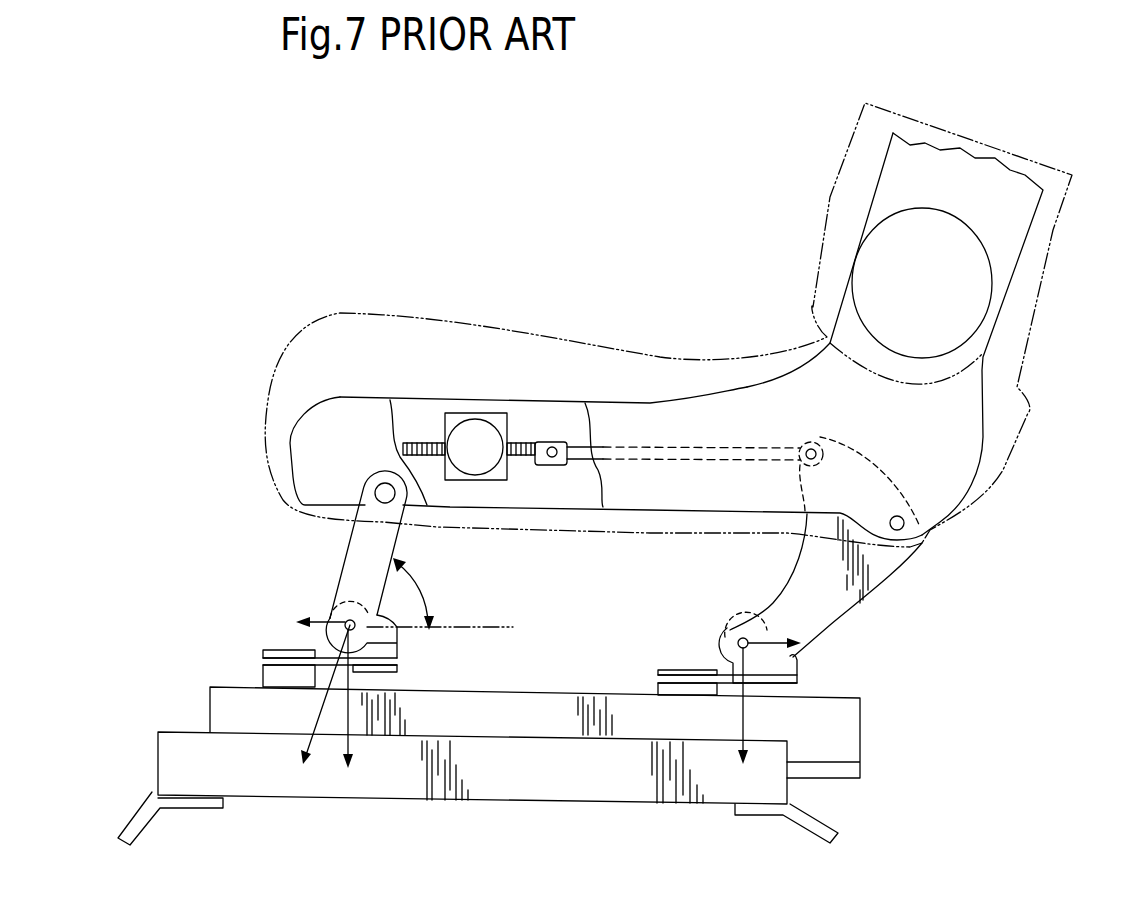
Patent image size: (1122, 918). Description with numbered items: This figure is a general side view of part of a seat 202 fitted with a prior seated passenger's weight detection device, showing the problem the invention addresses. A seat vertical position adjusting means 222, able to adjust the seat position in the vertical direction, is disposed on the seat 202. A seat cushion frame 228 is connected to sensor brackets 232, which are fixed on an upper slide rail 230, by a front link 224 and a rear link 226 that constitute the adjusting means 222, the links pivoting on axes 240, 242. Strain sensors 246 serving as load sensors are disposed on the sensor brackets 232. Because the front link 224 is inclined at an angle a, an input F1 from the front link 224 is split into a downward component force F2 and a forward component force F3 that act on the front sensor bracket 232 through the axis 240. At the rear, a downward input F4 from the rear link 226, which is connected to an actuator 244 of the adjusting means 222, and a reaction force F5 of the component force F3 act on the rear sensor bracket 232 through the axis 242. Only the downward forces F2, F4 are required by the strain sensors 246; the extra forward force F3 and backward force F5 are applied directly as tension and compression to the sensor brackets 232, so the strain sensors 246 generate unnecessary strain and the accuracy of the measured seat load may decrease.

The seat 202 is at (708, 304).
The seat vertical position adjusting means 222 is at (642, 422).
The front link 224 is at (393, 533).
The rear link 226 is at (890, 562).
The seat cushion frame 228 is at (692, 497).
The upper slide rail 230 is at (853, 747).
The sensor brackets 232 is at (397, 643).
The axis 240 is at (347, 603).
The axis 242 is at (727, 623).
The actuator 244 is at (507, 412).
The strain sensors 246 is at (340, 652).
The input F1 is at (320, 717).
The downward component force F2 is at (355, 723).
The forward component force F3 is at (320, 617).
The downward input F4 is at (740, 717).
The reaction force F5 is at (790, 640).
The angle of inclination a is at (428, 595).